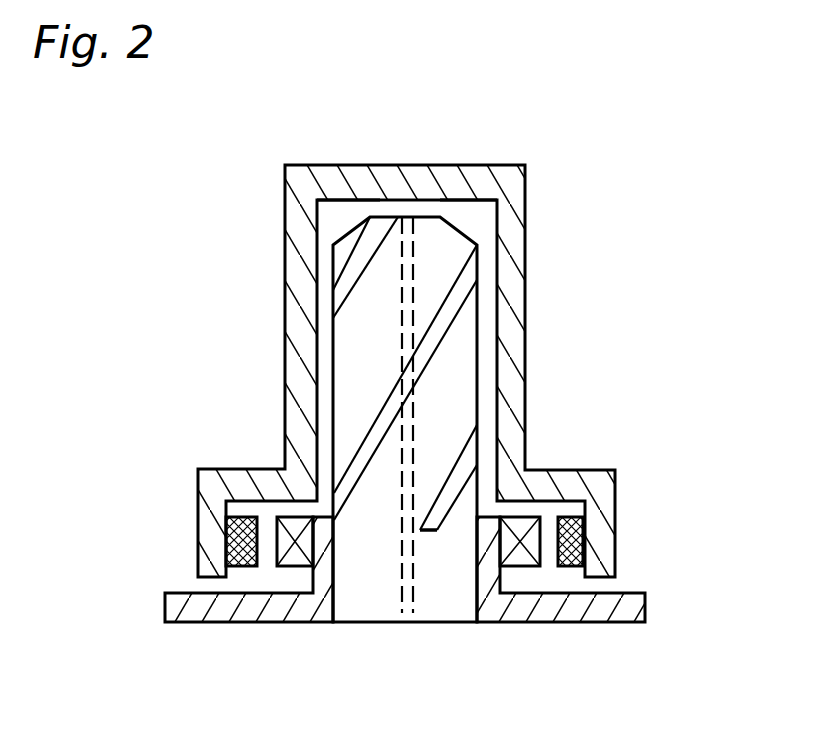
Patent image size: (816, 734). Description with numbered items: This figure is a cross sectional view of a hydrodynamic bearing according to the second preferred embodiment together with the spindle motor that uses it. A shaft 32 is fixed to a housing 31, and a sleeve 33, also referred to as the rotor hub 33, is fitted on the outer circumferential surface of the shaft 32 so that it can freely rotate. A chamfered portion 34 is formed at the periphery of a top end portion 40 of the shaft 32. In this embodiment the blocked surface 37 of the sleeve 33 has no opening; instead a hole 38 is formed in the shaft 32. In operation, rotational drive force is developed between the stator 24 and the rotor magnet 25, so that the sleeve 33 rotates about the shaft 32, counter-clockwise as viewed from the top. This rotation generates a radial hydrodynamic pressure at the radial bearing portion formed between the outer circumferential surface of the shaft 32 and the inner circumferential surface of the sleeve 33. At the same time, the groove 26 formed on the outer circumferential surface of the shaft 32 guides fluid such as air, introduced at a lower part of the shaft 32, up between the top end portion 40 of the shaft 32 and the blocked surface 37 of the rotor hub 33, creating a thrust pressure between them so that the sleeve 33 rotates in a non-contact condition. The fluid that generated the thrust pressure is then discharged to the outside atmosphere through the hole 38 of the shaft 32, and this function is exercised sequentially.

The stator 24 is at (517, 522).
The rotor magnet 25 is at (577, 537).
The groove 26 is at (433, 355).
The housing 31 is at (235, 602).
The shaft 32 is at (380, 590).
The sleeve 33 is at (423, 180).
The chamfered portion 34 is at (352, 230).
The blocked surface 37 is at (450, 200).
The hole 38 is at (413, 572).
The top end portion 40 is at (373, 198).